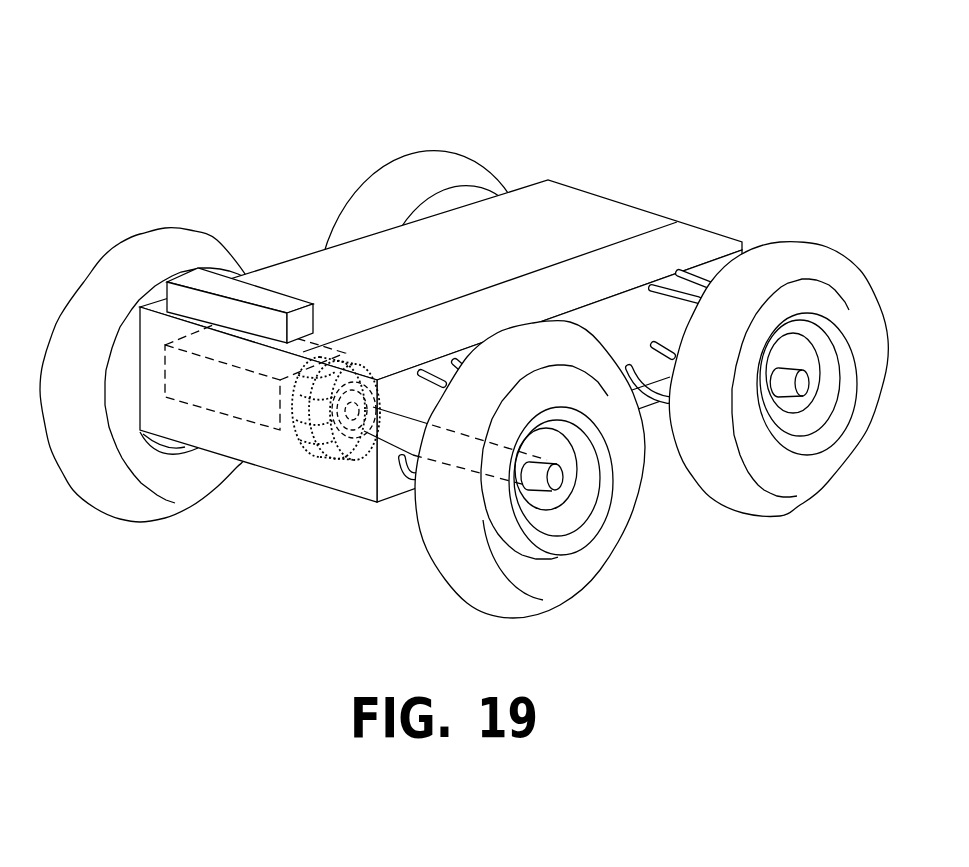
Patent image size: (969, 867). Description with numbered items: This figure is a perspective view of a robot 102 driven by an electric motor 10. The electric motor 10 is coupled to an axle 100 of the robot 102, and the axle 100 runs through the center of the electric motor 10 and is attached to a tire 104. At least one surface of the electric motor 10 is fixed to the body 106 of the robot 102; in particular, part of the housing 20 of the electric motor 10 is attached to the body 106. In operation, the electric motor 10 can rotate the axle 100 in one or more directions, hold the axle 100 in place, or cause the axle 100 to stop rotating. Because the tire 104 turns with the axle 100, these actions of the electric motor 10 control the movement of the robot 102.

The electric motor 10 is at (394, 340).
The housing 20 is at (307, 452).
The axle 100 is at (380, 455).
The robot 102 is at (464, 320).
The tire 104 is at (425, 557).
The body 106 is at (266, 275).